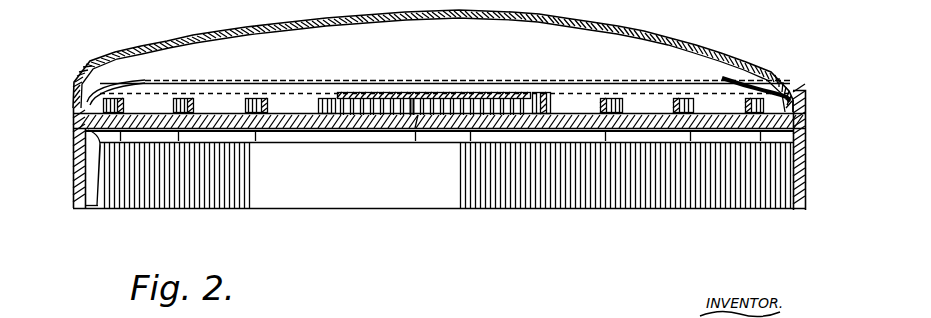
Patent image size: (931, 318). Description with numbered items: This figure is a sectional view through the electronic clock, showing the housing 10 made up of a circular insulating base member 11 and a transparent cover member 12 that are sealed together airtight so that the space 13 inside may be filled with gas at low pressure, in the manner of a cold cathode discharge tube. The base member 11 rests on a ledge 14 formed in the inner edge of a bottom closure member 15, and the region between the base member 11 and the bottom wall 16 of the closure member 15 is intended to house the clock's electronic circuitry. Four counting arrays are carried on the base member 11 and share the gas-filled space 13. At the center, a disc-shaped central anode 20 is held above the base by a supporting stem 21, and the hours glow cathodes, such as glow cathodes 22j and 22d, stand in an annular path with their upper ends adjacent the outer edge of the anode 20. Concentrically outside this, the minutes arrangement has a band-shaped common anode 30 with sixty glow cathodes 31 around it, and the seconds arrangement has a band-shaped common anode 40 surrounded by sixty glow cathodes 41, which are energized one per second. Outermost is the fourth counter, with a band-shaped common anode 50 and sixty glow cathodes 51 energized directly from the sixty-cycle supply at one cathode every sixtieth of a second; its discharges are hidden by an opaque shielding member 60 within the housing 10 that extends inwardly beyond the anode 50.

The housing 10 is at (619, 21).
The base member 11 is at (492, 130).
The cover member 12 is at (236, 27).
The space 13 is at (600, 80).
The ledge 14 is at (75, 122).
The bottom closure member 15 is at (326, 194).
The bottom wall 16 is at (88, 207).
The central anode 20 is at (482, 92).
The supporting stem 21 is at (418, 130).
The glow cathode 22j is at (318, 98).
The glow cathode 22d is at (546, 94).
The common anode 30 is at (282, 102).
The glow cathode 31 is at (660, 100).
The common anode 40 is at (215, 102).
The glow cathode 41 is at (693, 100).
The common anode 50 is at (155, 102).
The glow cathode 51 is at (775, 84).
The shielding member 60 is at (760, 90).